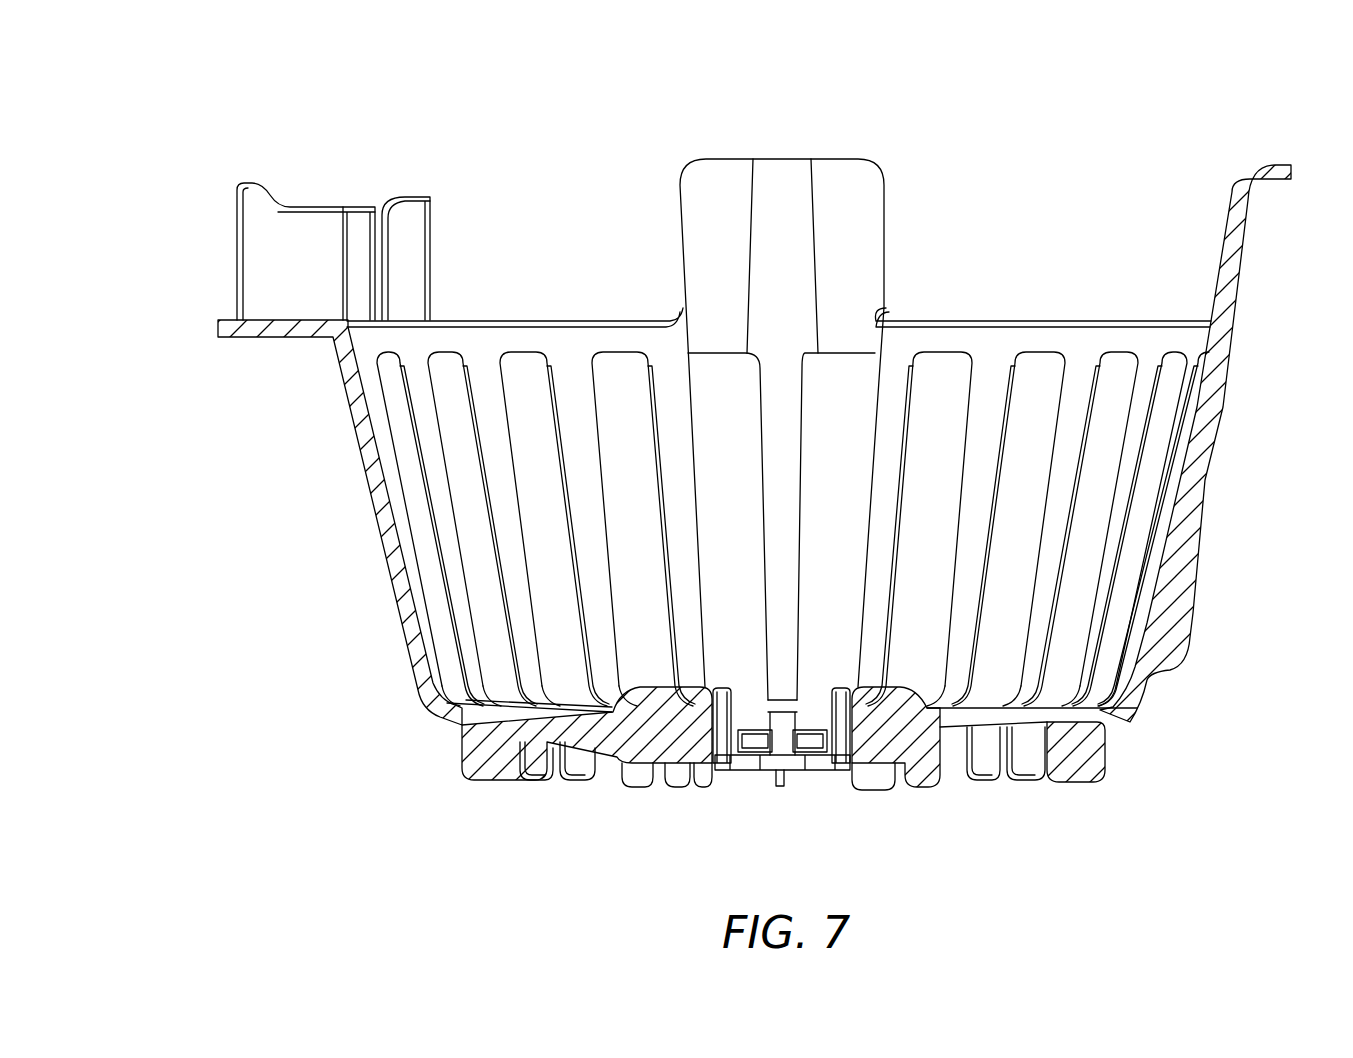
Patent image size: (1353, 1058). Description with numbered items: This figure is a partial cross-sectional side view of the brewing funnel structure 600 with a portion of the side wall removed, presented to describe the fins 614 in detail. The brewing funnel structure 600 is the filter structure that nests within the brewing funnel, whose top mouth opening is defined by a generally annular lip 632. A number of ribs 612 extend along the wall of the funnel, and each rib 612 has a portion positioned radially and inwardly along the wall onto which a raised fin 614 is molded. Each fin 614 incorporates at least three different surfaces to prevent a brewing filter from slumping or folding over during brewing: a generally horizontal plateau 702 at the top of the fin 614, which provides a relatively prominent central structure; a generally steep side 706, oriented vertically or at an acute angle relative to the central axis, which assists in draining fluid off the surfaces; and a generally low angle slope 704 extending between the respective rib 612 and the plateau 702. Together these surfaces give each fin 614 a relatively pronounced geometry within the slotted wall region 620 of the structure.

The brewing funnel structure 600 is at (162, 146).
The annular lip 632 is at (512, 322).
The slotted side wall 620 is at (990, 368).
The plateau 702 is at (665, 688).
The steep side 706 is at (715, 710).
The raised fin 614 is at (875, 688).
The low angle slope 704 is at (630, 705).
The rib 612 is at (1000, 720).